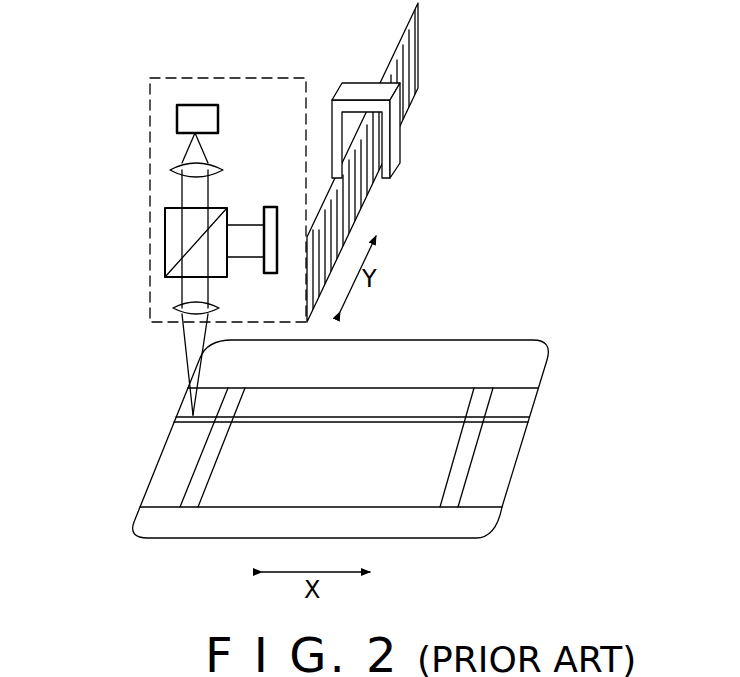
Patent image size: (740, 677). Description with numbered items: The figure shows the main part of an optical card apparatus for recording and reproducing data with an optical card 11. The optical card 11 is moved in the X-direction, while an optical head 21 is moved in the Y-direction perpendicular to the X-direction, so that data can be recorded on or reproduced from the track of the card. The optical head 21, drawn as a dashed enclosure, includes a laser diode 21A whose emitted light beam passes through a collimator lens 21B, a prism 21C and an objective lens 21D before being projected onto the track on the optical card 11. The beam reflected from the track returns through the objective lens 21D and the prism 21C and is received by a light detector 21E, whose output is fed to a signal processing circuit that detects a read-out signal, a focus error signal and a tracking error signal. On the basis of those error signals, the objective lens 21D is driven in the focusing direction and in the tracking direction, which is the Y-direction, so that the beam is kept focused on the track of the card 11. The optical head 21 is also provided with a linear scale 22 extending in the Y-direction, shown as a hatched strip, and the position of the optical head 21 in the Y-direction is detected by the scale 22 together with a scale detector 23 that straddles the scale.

The optical card 11 is at (497, 340).
The optical head 21 is at (268, 76).
The laser diode 21A is at (177, 118).
The collimator lens 21B is at (172, 170).
The prism 21C is at (165, 224).
The objective lens 21D is at (175, 308).
The light detector 21E is at (272, 207).
The linear scale 22 is at (419, 60).
The scale detector 23 is at (398, 148).